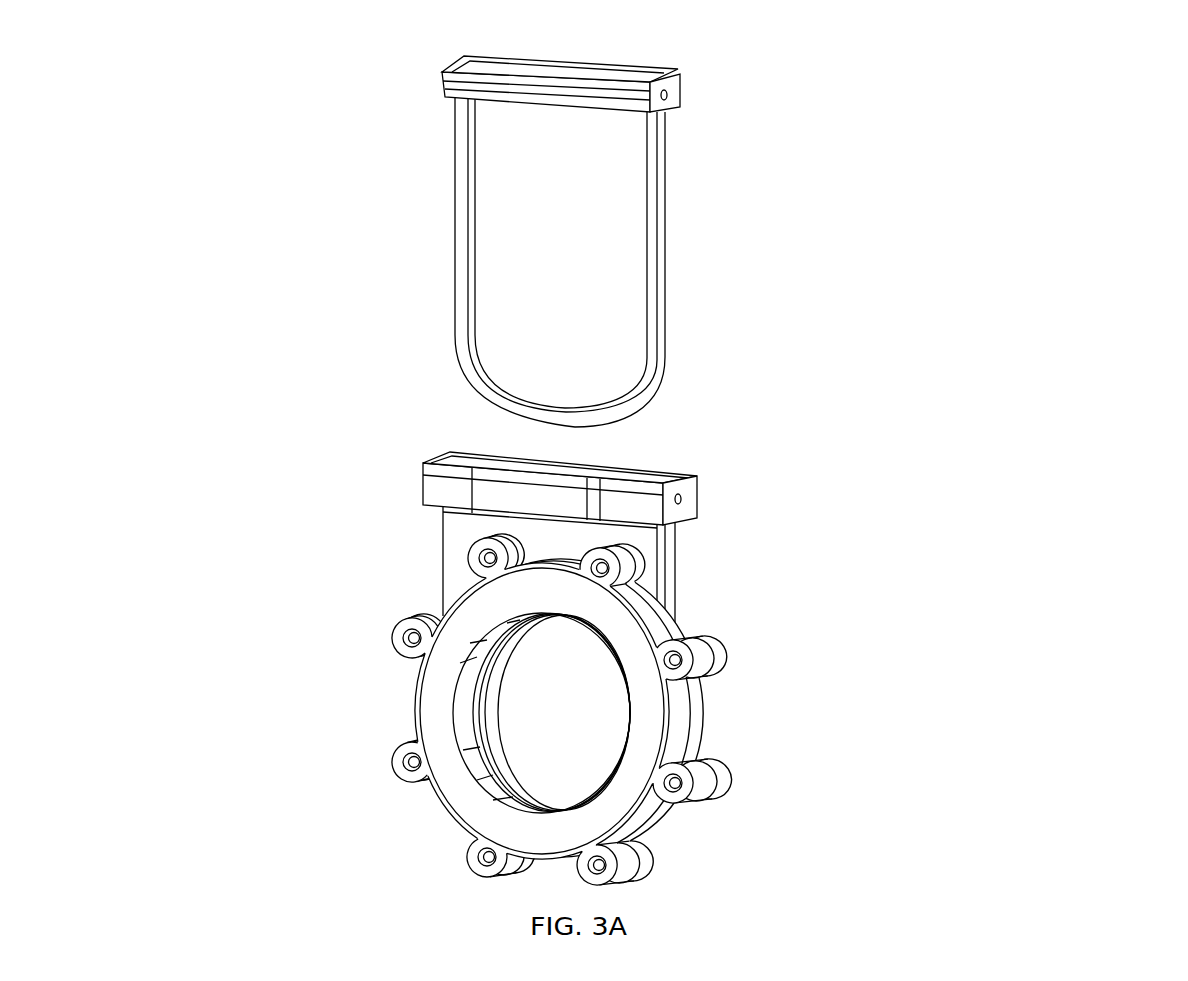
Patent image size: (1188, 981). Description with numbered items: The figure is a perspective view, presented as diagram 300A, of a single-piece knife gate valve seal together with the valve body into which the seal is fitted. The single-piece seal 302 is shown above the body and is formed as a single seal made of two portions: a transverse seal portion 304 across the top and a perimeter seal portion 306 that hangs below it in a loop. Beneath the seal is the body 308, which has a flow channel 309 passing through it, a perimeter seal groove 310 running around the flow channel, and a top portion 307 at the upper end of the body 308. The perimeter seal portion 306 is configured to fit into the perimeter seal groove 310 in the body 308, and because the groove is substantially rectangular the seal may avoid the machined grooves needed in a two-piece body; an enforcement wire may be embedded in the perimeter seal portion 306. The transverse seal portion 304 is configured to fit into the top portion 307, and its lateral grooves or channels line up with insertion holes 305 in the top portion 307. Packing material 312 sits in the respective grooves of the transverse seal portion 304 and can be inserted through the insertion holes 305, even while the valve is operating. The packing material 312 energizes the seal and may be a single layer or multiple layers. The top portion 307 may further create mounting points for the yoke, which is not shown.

The diagram 300A is at (1010, 93).
The single-piece seal 302 is at (296, 54).
The transverse seal portion 304 is at (438, 83).
The insertion holes 305 is at (688, 496).
The perimeter seal portion 306 is at (447, 220).
The top portion 307 is at (420, 486).
The body 308 is at (460, 542).
The flow channel 309 is at (522, 712).
The perimeter seal groove 310 is at (535, 806).
The packing material 312 is at (665, 93).